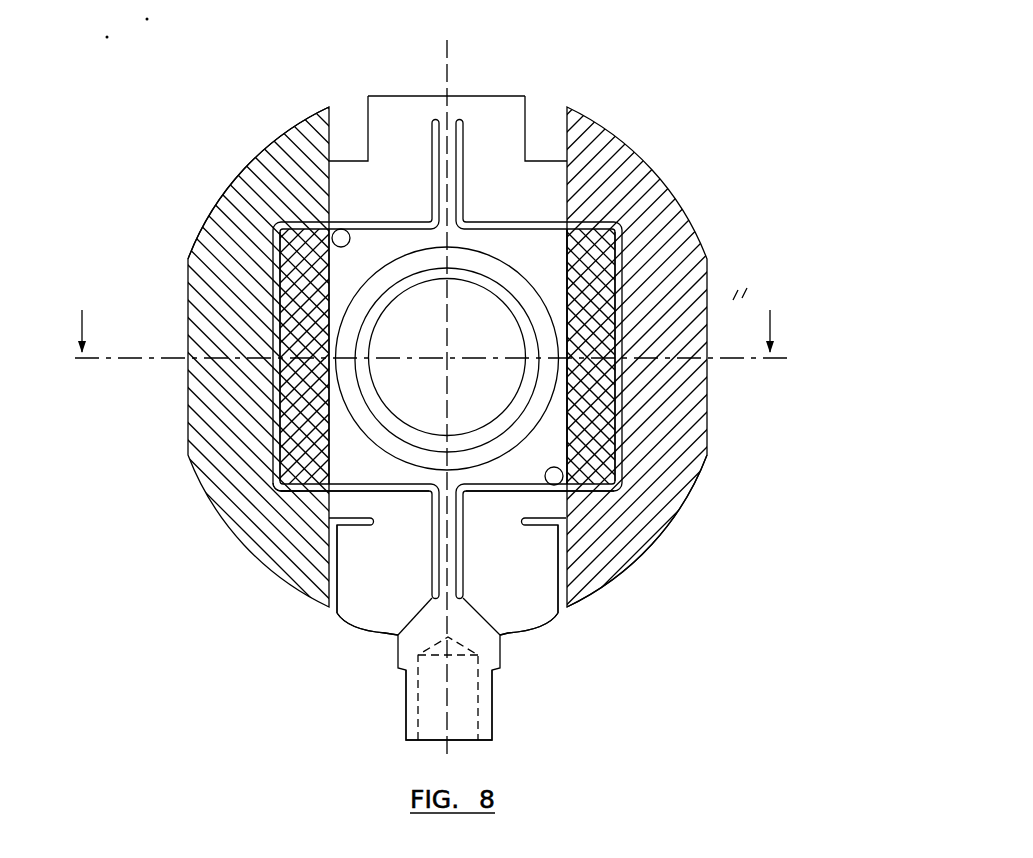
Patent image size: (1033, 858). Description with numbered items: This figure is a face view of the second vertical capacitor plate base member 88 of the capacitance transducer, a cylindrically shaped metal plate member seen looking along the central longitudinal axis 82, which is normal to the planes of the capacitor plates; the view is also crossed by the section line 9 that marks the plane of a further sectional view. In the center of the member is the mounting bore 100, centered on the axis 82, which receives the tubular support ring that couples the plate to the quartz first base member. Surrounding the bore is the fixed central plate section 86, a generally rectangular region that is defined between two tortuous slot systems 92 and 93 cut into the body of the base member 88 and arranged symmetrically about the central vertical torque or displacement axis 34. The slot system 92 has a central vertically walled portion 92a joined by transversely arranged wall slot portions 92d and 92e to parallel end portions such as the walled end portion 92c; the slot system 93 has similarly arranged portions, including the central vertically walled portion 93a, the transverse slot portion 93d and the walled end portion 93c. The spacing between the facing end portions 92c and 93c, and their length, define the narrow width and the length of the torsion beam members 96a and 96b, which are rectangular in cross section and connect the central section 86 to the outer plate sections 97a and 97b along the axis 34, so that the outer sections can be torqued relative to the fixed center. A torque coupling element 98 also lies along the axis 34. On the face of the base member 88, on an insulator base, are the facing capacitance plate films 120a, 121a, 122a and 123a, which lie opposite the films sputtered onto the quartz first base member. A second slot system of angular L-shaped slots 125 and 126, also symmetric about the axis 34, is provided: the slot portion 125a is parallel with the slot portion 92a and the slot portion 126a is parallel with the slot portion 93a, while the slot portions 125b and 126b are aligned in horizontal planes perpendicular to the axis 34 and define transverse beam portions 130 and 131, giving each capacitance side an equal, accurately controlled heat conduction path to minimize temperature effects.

The torque or displacement axis 34 is at (450, 52).
The section line 9- 9 is at (432, 321).
The central longitudinal axis 82 is at (447, 358).
The fixed central plate section 86 is at (572, 247).
The second vertical capacitor plate base member 88 is at (511, 193).
The slot system 92 is at (266, 240).
The central vertically walled portion 92a is at (278, 412).
The walled end portion 92c is at (436, 147).
The transversely arranged wall slot portion 92d is at (330, 490).
The transversely arranged wall slot portion 92e is at (308, 228).
The slot system 93 is at (630, 267).
The central vertically walled portion 93a is at (622, 310).
The walled end portion 93c is at (527, 145).
The transversely arranged wall slot portion 93d is at (588, 490).
The torsion beam member 96a is at (500, 140).
The torsion beam member 96b is at (436, 595).
The outer plate section 97a is at (523, 593).
The outer plate section 97b is at (460, 182).
The torque coupling element 98 is at (492, 716).
The mounting bore 100 is at (512, 300).
The capacitance plate film 120a is at (297, 378).
The capacitance plate film 121a is at (223, 243).
The capacitance plate film 122a is at (698, 470).
The capacitance plate film 123a is at (602, 396).
The L-shaped slot 125 is at (327, 548).
The slot portion 125a is at (333, 604).
The slot portion 125b is at (355, 520).
The L-shaped slot 126 is at (563, 582).
The slot portion 126a is at (577, 607).
The slot portion 126b is at (545, 527).
The transverse beam portion 130 is at (348, 505).
The transverse beam portion 131 is at (538, 503).